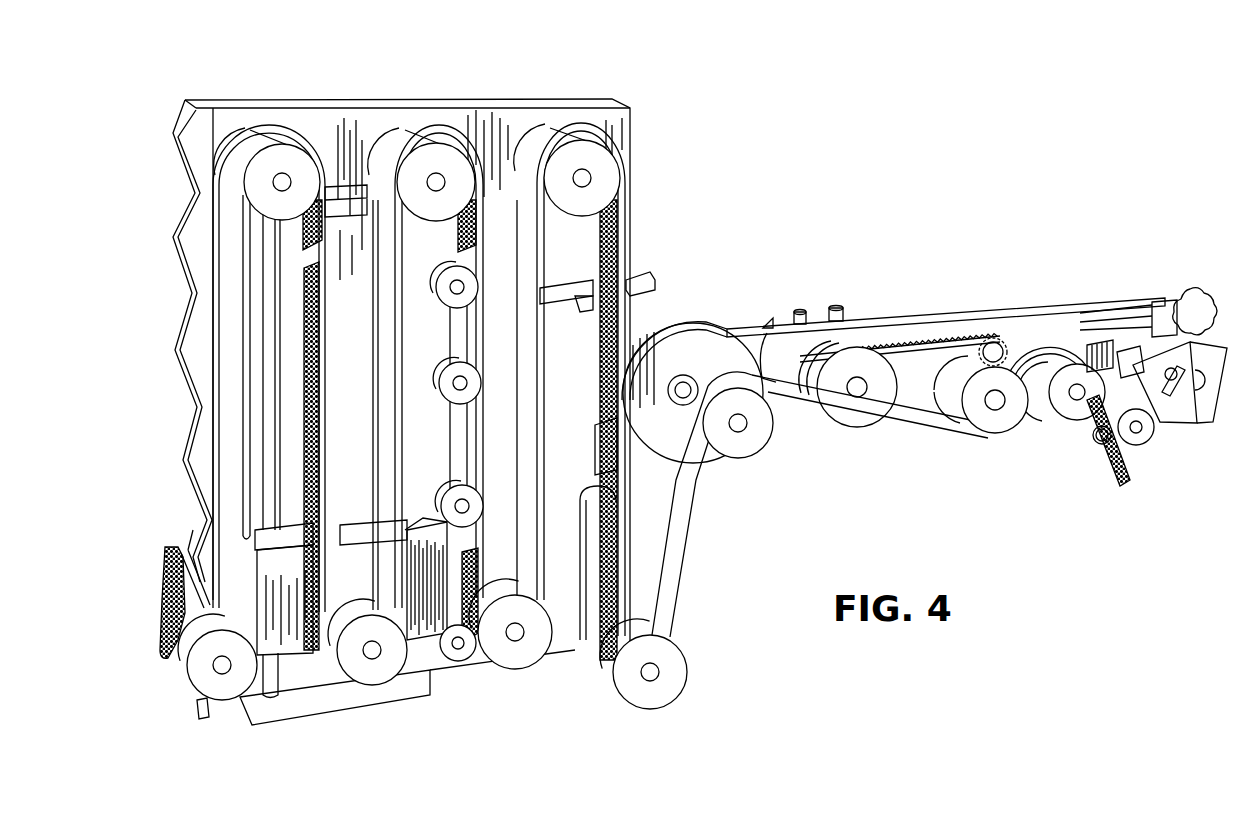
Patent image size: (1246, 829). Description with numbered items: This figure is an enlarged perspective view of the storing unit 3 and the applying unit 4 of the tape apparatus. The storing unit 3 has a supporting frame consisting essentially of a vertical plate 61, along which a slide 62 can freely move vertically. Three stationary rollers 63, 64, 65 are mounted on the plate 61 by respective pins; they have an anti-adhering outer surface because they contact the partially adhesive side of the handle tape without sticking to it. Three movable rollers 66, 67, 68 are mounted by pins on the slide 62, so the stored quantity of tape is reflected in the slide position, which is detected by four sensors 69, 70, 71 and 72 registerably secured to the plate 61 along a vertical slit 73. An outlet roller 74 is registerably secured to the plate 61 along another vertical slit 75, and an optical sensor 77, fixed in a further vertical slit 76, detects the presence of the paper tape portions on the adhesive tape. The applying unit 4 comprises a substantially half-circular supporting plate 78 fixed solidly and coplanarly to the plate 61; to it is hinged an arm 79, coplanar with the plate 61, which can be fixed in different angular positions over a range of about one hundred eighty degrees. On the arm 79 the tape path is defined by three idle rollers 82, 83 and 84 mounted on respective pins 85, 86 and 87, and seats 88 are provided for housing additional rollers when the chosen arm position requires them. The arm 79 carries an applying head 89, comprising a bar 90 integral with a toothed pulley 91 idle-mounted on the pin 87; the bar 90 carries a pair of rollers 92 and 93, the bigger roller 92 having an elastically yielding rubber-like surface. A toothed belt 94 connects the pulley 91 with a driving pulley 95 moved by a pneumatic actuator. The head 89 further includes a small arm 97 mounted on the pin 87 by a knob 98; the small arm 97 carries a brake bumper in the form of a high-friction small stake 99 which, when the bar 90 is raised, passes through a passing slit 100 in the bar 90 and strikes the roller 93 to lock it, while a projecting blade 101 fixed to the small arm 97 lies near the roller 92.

The storing unit 3 is at (352, 92).
The applying unit 4 is at (855, 290).
The vertical plate 61 is at (555, 103).
The slide 62 is at (355, 550).
The stationary roller 63 is at (305, 160).
The stationary roller 64 is at (447, 157).
The stationary roller 65 is at (612, 175).
The movable roller 66 is at (197, 680).
The movable roller 67 is at (377, 680).
The movable roller 68 is at (527, 653).
The sensor 69 is at (473, 658).
The sensor 70 is at (480, 507).
The sensor 71 is at (467, 383).
The sensor 72 is at (463, 290).
The vertical slit 73 is at (453, 420).
The outlet roller 74 is at (673, 677).
The vertical slit 75 is at (582, 503).
The vertical slit 76 is at (547, 407).
The optical sensor 77 is at (637, 277).
The supporting plate 78 is at (655, 312).
The arm 79 is at (753, 330).
The idle roller 82 is at (730, 450).
The idle roller 83 is at (977, 417).
The idle roller 84 is at (1057, 410).
The pin 85 is at (747, 423).
The pin 86 is at (1000, 407).
The pin 87 is at (1080, 403).
The seats 88 is at (767, 327).
The applying head 89 is at (1136, 246).
The bar 90 is at (1060, 323).
The toothed pulley 91 is at (988, 347).
The roller 92 is at (1147, 440).
The roller 93 is at (1083, 430).
The toothed belt 94 is at (938, 330).
The driving pulley 95 is at (852, 423).
The small arm 97 is at (1127, 337).
The knob 98 is at (1187, 287).
The small stake 99 is at (1110, 368).
The passing slit 100 is at (1083, 333).
The projecting blade 101 is at (1163, 427).